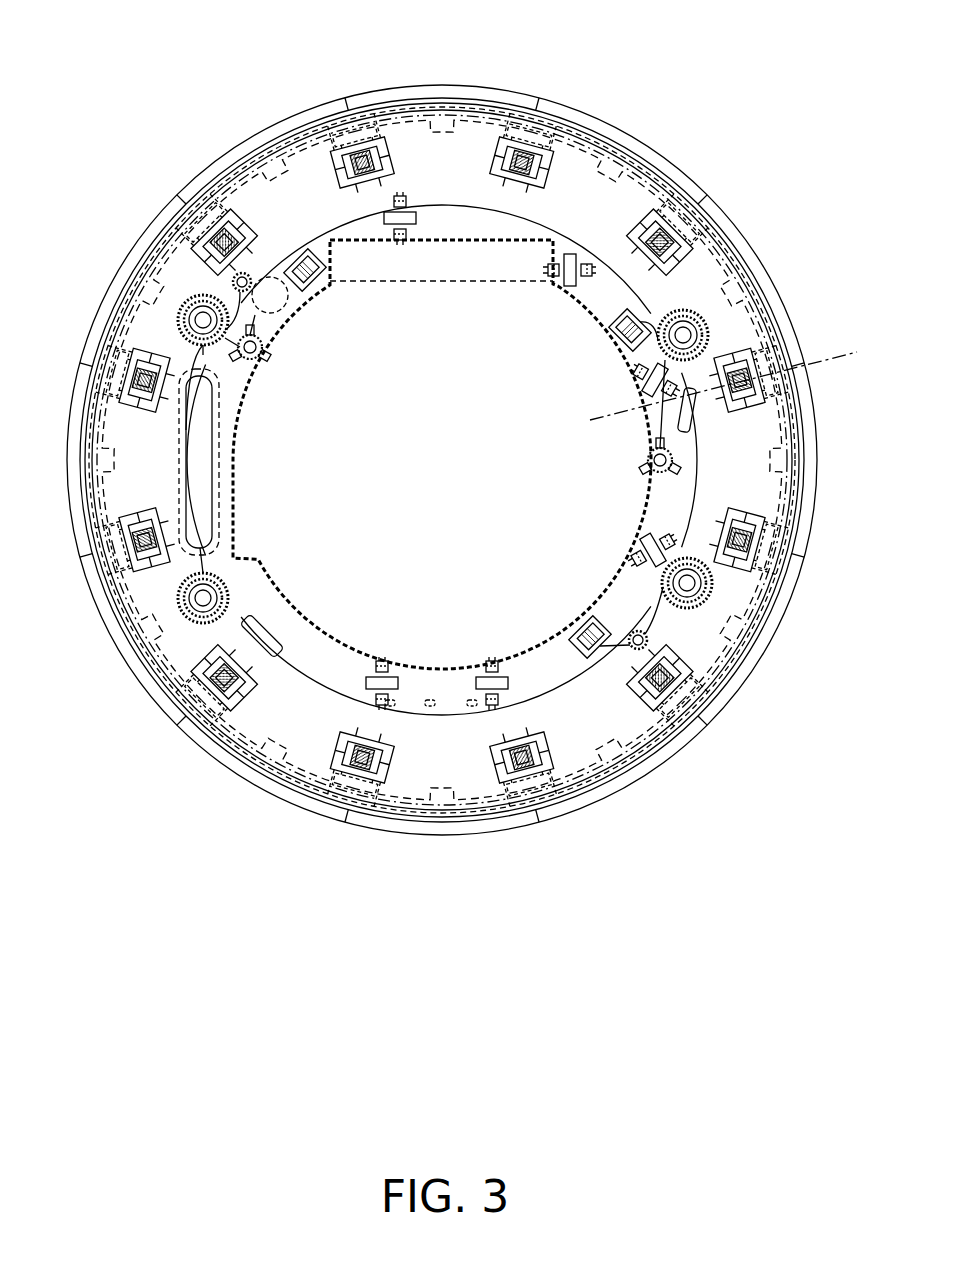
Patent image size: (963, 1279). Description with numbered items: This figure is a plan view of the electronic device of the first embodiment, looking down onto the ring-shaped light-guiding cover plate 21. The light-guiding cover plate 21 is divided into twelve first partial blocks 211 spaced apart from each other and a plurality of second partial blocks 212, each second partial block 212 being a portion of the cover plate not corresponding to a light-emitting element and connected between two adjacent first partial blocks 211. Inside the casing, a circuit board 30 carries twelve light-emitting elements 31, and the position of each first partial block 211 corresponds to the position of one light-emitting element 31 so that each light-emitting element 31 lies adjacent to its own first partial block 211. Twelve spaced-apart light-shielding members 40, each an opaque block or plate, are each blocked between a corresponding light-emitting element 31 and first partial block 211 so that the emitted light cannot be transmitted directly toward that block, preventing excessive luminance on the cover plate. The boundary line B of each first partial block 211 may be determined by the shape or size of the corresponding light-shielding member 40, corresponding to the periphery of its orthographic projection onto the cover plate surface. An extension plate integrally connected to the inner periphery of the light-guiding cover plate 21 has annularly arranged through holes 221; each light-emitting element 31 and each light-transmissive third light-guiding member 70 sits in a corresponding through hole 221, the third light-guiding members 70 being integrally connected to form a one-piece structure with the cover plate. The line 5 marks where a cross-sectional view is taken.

The light-guiding cover plate 21 is at (752, 227).
The first partial block 211 is at (368, 100).
The second partial block 212 is at (440, 88).
The through hole 221 is at (640, 222).
The circuit board 30 is at (767, 284).
The light-emitting element 31 is at (680, 233).
The light-shielding member 40 is at (747, 260).
The third light-guiding member 70 is at (663, 237).
The boundary line B is at (380, 92).
The line 5- 5 is at (600, 424).